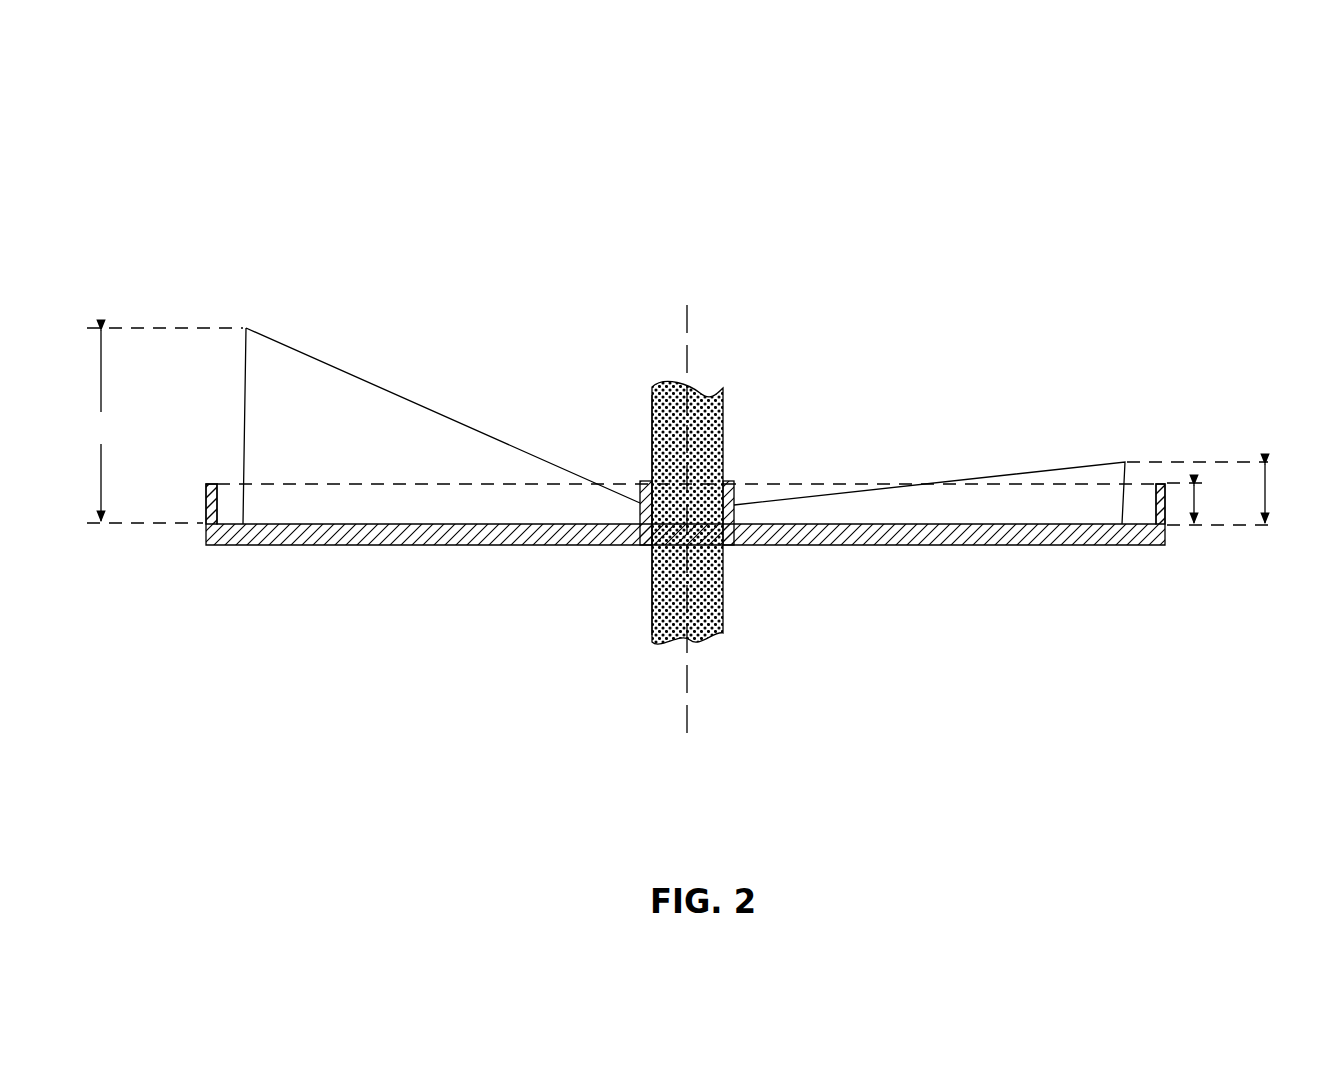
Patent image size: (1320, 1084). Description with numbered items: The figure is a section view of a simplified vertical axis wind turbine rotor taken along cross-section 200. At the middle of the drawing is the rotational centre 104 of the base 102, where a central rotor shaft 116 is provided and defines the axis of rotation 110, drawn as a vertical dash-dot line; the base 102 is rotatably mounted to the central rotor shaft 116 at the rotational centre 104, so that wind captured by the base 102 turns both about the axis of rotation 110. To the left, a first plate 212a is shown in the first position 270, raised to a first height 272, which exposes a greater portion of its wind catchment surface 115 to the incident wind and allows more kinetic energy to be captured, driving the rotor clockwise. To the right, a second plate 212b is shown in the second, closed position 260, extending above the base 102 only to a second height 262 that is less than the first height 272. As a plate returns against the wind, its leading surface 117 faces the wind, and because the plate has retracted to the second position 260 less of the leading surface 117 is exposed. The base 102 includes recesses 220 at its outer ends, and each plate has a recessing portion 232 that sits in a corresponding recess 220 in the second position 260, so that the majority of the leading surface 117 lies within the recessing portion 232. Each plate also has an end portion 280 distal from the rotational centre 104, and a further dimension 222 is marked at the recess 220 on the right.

The cross-section 200 is at (456, 146).
The base 102 is at (205, 533).
The rotational centre 104 is at (703, 462).
The axis of rotation 110 is at (687, 315).
The wind catchment surface 115 is at (336, 424).
The central rotor shaft 116 is at (652, 417).
The leading surface 117 is at (991, 509).
The first plate 212a is at (363, 379).
The second plate 212b is at (970, 470).
The recess 220 is at (235, 494).
The lip height 222 is at (1202, 513).
The recessing portion 232 is at (1027, 507).
The second position 260 is at (1077, 453).
The second height 262 is at (1266, 501).
The first position 270 is at (313, 333).
The first height 272 is at (165, 425).
The end portion 280 is at (1138, 462).